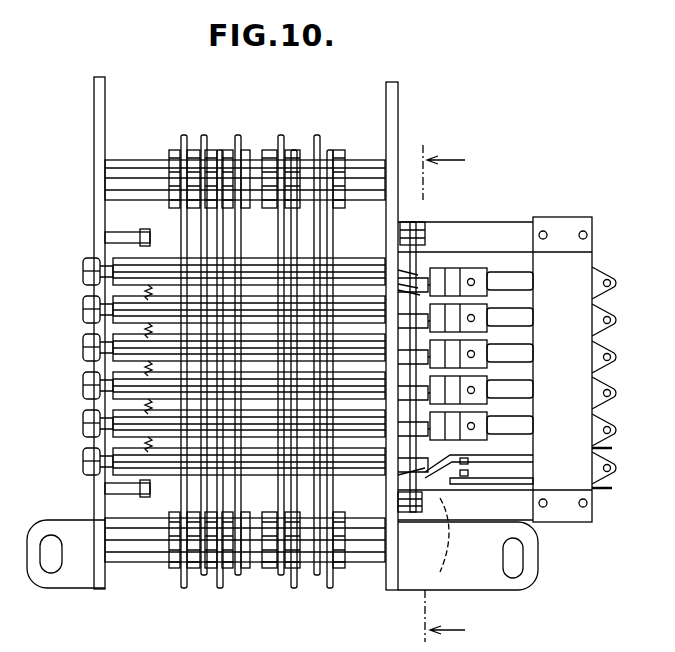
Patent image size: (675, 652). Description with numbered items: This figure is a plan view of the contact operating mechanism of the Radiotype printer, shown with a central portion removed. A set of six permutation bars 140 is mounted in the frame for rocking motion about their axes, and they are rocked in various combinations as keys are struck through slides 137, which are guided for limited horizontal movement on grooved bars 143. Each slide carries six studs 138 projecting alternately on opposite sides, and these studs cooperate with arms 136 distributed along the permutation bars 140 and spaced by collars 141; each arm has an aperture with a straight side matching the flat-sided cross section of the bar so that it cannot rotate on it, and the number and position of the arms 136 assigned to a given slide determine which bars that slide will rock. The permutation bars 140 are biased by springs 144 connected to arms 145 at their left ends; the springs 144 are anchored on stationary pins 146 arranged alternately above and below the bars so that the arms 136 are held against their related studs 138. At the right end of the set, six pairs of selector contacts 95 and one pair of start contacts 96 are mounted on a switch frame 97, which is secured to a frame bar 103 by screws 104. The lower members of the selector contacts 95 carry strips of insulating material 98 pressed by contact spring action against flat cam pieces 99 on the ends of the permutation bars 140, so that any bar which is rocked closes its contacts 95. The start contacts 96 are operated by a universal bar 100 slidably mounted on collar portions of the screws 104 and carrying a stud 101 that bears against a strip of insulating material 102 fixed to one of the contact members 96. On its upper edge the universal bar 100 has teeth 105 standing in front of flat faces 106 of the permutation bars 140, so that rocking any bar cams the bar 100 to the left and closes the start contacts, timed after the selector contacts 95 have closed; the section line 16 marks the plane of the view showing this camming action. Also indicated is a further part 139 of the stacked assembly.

The section line 16- 16 is at (431, 393).
The selector contacts 95 is at (500, 275).
The start contacts 96 is at (467, 471).
The switch frame 97 is at (560, 380).
The strips of insulating material 98 is at (455, 275).
The flat cam pieces 99 is at (433, 253).
The universal bar 100 is at (394, 477).
The stud 101 is at (432, 508).
The strip of insulating material 102 is at (432, 466).
The frame bar 103 is at (392, 572).
The screws 104 is at (521, 575).
The teeth 105 is at (405, 268).
The flat faces 106 is at (410, 283).
The arms 136 is at (295, 466).
The slides 137 is at (223, 586).
The studs 138 is at (280, 278).
The insulating plate 139 is at (181, 478).
The permutation bars 140 is at (140, 463).
The collars 141 is at (175, 342).
The grooved bars 143 is at (150, 162).
The springs 144 is at (150, 302).
The arms 145 is at (150, 266).
The stationary pins 146 is at (105, 350).